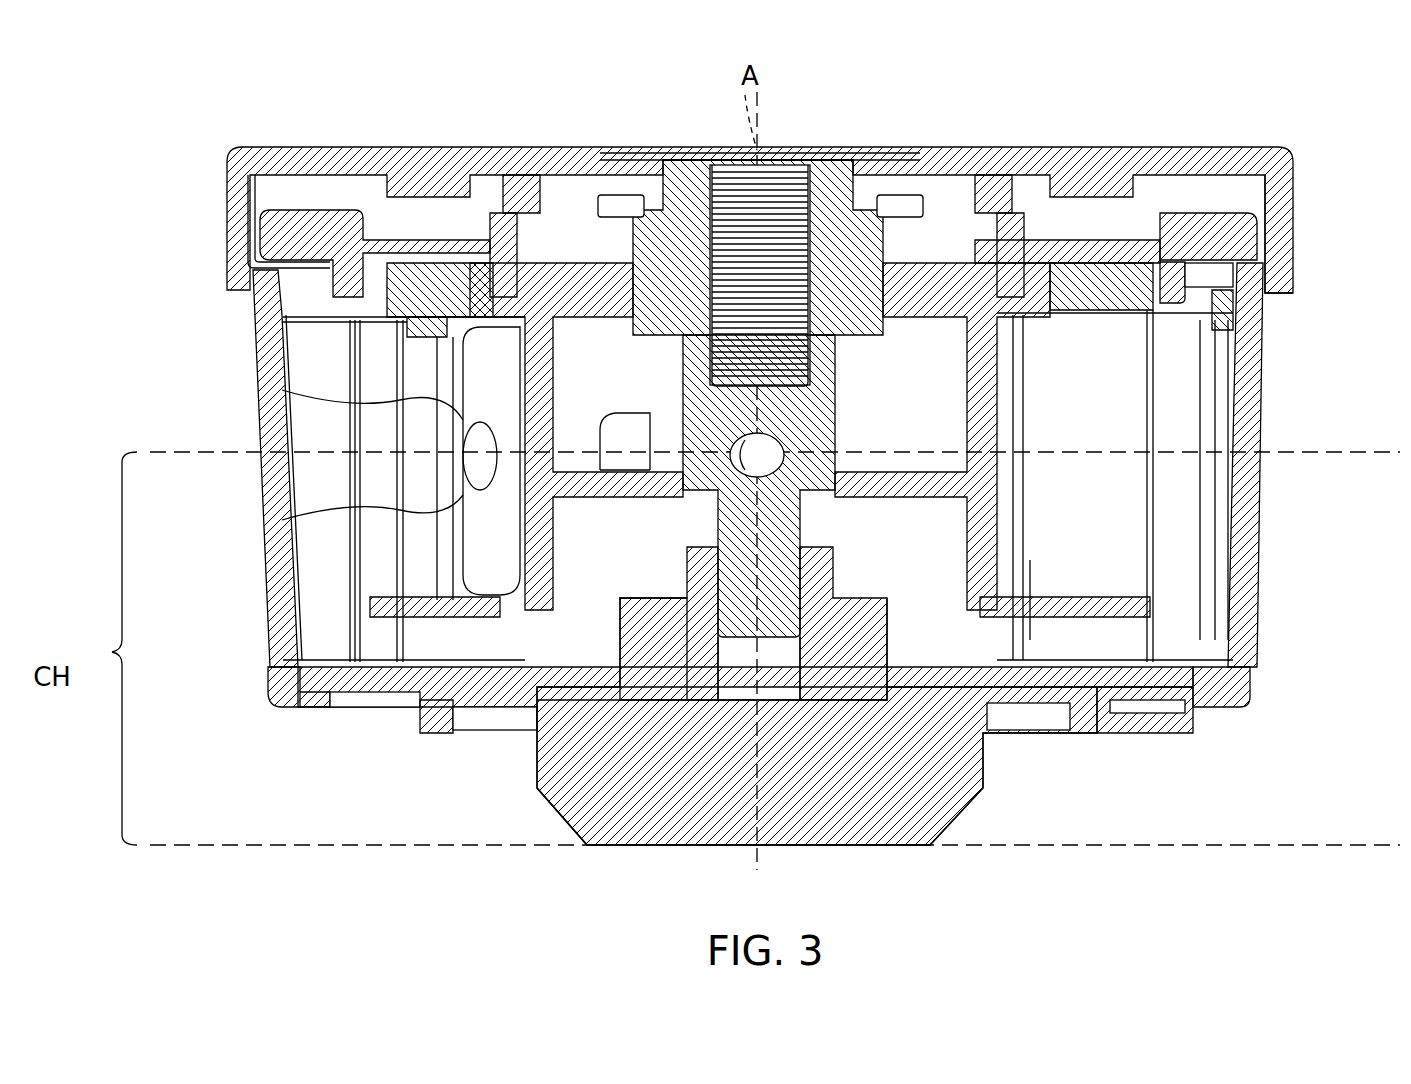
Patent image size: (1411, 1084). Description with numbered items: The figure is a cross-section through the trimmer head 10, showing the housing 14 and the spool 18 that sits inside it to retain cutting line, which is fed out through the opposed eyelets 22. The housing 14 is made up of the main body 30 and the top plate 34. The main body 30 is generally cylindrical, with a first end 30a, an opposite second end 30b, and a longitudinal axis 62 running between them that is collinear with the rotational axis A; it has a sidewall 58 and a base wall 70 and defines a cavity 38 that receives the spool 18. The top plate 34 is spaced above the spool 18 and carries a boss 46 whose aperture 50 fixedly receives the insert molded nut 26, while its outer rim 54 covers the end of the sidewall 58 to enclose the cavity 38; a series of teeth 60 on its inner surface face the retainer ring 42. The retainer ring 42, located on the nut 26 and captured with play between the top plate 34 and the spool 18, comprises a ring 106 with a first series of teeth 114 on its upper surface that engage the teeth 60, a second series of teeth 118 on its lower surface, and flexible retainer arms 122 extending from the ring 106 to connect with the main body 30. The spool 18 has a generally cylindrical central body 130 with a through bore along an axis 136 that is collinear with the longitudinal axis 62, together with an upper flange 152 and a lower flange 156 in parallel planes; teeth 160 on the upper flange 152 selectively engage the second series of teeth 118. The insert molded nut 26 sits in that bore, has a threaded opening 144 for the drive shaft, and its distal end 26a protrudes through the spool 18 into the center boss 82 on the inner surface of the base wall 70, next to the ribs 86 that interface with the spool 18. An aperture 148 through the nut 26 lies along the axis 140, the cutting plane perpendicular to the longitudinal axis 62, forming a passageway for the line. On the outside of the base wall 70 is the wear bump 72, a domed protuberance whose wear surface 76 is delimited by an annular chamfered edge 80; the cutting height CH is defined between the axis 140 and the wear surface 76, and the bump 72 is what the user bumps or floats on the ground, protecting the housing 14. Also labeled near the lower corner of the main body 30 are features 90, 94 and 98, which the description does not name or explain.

The trimmer head 10 is at (994, 104).
The housing 14 is at (171, 305).
The spool 18 is at (600, 315).
The eyelets 22 is at (480, 400).
The insert molded nut 26 is at (832, 205).
The distal end 26a is at (798, 622).
The main body 30 is at (1250, 620).
The first end 30a is at (1323, 259).
The second end 30b is at (1276, 703).
The top plate 34 is at (250, 152).
The cavity 38 is at (1011, 645).
The retainer ring 42 is at (1148, 245).
The boss 46 is at (622, 165).
The aperture 50 is at (672, 195).
The outer rim 54 is at (246, 205).
The sidewall 58 is at (268, 512).
The teeth 60 is at (1066, 190).
The longitudinal axis 62 is at (790, 845).
The base wall 70 is at (356, 707).
The wear bump 72 is at (646, 836).
The wear surface 76 is at (757, 847).
The chamfered edge 80 is at (955, 832).
The center boss 82 is at (697, 700).
The ribs 86 is at (360, 580).
The foot 90 is at (282, 664).
The lip 94 is at (303, 707).
The groove 98 is at (440, 735).
The ring 106 is at (305, 225).
The first series of teeth 114 is at (1122, 205).
The second series of teeth 118 is at (1160, 290).
The retainer arms 122 is at (1115, 550).
The central body 130 is at (980, 500).
The axis 136 is at (860, 905).
The axis 140 is at (1348, 447).
The threaded opening 144 is at (792, 140).
The aperture 148 is at (797, 462).
The upper flange 152 is at (420, 280).
The lower flange 156 is at (511, 707).
The teeth 160 is at (1195, 292).